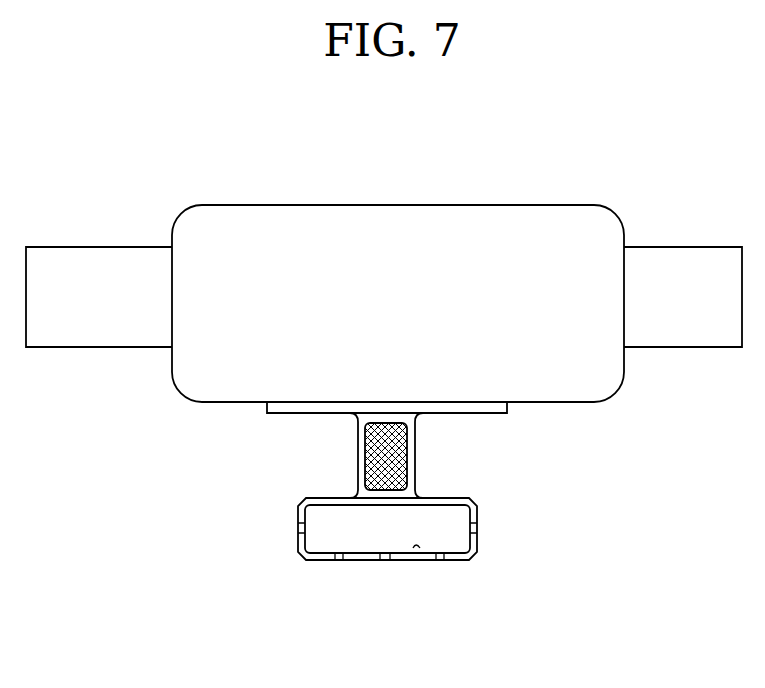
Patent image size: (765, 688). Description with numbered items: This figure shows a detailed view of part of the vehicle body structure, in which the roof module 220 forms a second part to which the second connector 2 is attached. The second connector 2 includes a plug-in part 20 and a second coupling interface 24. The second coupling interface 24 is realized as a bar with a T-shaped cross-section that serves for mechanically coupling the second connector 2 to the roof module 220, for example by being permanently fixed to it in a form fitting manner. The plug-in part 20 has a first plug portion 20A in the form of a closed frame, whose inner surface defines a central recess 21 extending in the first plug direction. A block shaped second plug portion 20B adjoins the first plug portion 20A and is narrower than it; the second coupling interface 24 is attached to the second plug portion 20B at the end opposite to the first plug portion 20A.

The roof module 220 is at (368, 205).
The second coupling interface 24 is at (283, 413).
The second plug portion 20B is at (428, 455).
The first plug portion 20A is at (446, 562).
The plug-in part 20 is at (468, 553).
The central recess 21 is at (414, 548).
The second connector 2 is at (438, 539).